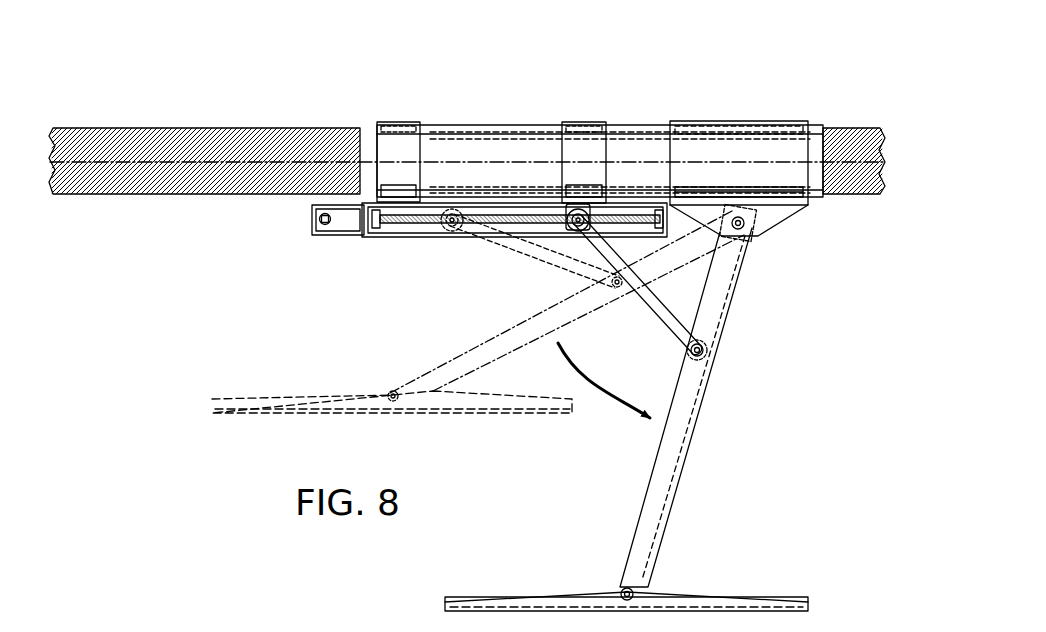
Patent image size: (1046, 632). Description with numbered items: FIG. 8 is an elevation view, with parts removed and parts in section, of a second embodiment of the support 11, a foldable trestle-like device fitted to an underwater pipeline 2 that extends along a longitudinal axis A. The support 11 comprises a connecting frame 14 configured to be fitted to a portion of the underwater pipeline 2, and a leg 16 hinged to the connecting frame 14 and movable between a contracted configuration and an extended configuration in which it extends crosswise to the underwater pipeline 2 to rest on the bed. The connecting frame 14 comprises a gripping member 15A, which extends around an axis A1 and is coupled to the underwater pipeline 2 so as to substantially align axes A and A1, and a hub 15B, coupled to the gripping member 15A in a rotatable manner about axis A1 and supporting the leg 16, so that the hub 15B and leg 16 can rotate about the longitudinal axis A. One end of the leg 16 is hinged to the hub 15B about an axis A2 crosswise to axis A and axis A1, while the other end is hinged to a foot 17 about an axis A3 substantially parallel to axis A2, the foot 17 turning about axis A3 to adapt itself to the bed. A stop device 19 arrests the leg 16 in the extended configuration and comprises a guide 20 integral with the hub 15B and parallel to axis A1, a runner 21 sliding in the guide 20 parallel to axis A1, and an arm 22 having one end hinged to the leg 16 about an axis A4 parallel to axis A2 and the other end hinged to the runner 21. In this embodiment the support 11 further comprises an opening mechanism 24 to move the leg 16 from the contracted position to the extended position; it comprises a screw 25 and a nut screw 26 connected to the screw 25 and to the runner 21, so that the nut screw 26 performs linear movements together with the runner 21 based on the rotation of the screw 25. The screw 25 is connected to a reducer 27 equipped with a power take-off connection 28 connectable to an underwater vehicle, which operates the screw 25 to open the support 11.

The underwater pipeline 2 is at (174, 170).
The longitudinal axis A is at (102, 163).
The support 11 is at (772, 290).
The connecting frame 14 is at (611, 84).
The gripping member 15A is at (637, 121).
The hub 15B is at (741, 120).
The leg 16 is at (490, 325).
The foot 17 is at (305, 410).
The stop device 19 is at (553, 273).
The guide 20 is at (385, 239).
The runner 21 is at (457, 200).
The arm 22 is at (520, 240).
The opening mechanism 24 is at (440, 280).
The screw 25 is at (415, 226).
The nut screw 26 is at (462, 212).
The reducer 27 is at (338, 237).
The power take-off connection 28 is at (317, 225).
The axis A1 is at (522, 160).
The axis A2 is at (748, 226).
The axis A3 is at (393, 394).
The axis A4 is at (617, 292).